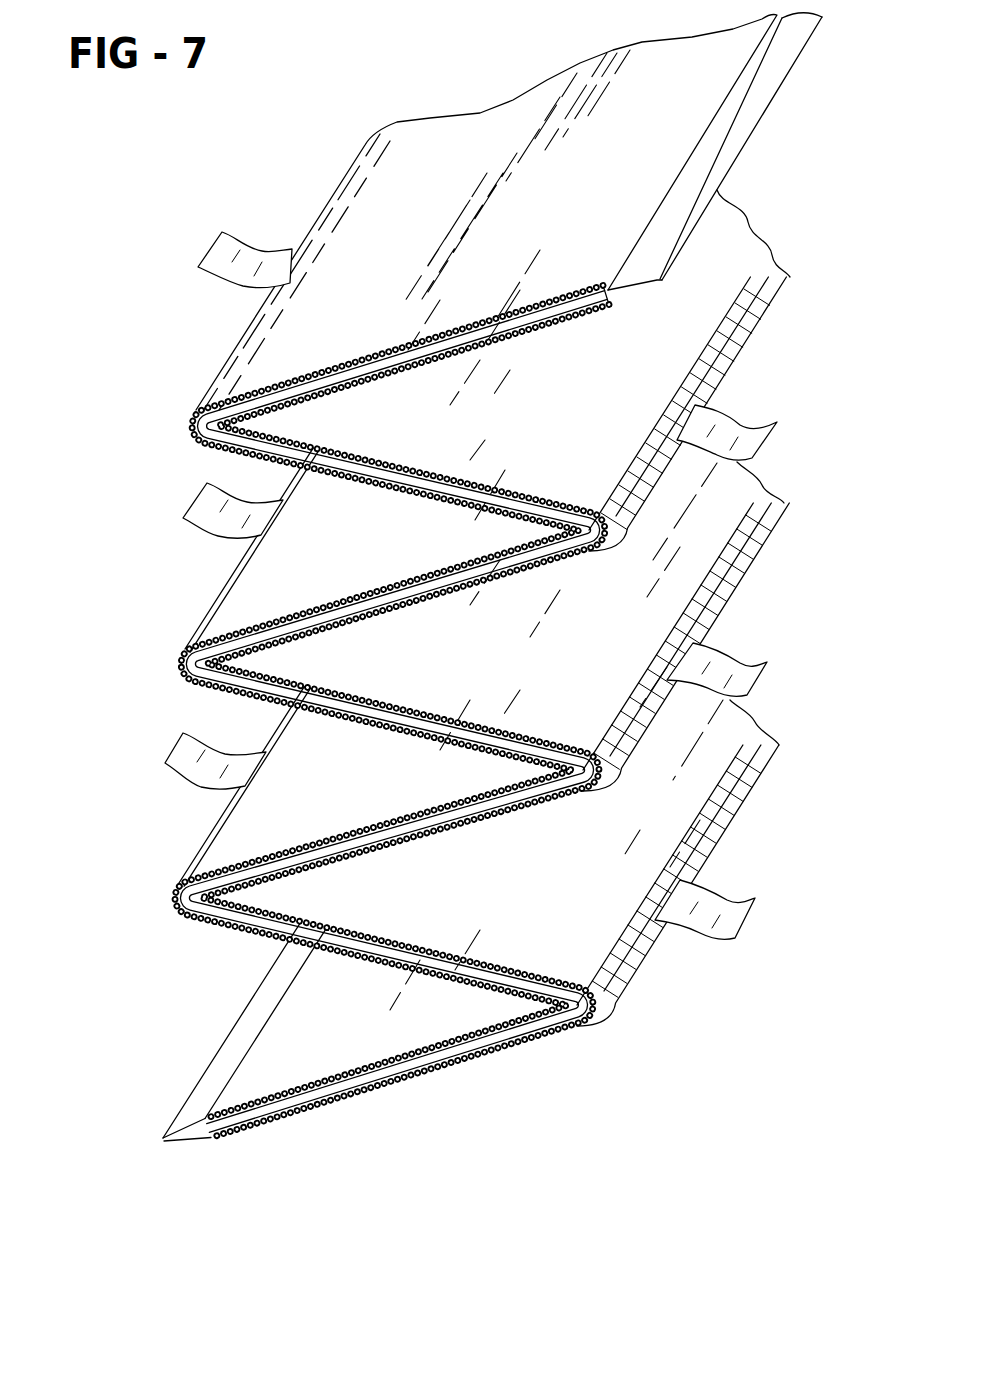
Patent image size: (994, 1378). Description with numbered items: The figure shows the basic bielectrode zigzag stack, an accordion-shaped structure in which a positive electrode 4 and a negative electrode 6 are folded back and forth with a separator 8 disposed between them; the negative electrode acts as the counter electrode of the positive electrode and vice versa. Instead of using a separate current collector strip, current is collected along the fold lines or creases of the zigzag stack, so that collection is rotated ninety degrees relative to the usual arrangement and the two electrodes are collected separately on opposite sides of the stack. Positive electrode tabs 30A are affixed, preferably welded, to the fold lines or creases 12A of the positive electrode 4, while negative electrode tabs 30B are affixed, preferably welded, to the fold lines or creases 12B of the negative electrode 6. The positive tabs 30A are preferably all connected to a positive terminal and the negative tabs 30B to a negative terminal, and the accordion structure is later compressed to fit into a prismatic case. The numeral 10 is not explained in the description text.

The positive electrode 4 is at (560, 296).
The negative electrode 6 is at (578, 320).
The separator 8 is at (662, 282).
The separator sheet 10 is at (777, 163).
The fold lines or creases of the positive electrode 12A is at (188, 426).
The fold lines or creases of the negative electrode 12B is at (757, 318).
The positive electrode tabs 30A is at (250, 240).
The negative electrode tabs 30B is at (745, 436).